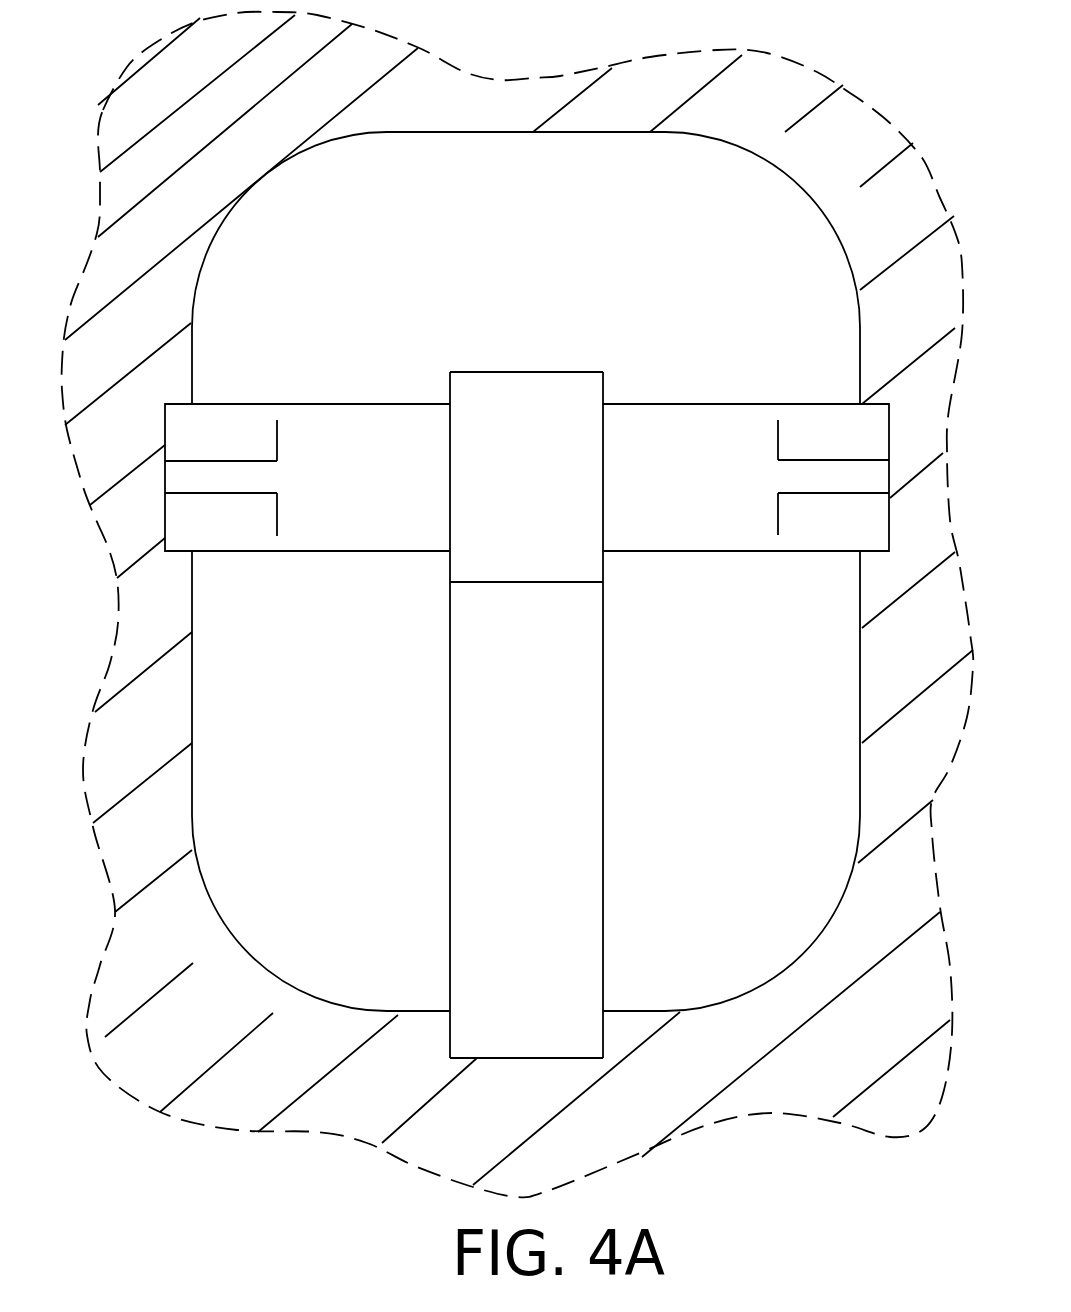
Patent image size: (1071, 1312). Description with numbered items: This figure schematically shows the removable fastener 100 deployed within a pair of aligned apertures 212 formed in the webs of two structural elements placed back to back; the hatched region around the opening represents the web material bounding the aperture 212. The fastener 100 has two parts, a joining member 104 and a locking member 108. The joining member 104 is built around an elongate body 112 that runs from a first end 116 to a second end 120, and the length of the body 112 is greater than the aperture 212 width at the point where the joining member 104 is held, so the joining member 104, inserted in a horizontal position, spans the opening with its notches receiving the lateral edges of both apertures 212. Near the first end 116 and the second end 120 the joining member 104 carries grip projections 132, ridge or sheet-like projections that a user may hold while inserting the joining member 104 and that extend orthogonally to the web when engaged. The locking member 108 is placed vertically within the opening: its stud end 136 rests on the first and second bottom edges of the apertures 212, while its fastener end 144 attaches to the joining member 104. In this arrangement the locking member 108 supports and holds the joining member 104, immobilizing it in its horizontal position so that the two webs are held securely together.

The removable fastener 100 is at (573, 234).
The joining member 104 is at (388, 455).
The locking member 108 is at (535, 740).
The elongate body 112 is at (658, 425).
The first end 116 is at (165, 424).
The second end 120 is at (889, 428).
The grip projection 132 is at (240, 472).
The stud end 136 is at (572, 1058).
The fastener end 144 is at (497, 372).
The aperture 212 is at (297, 205).